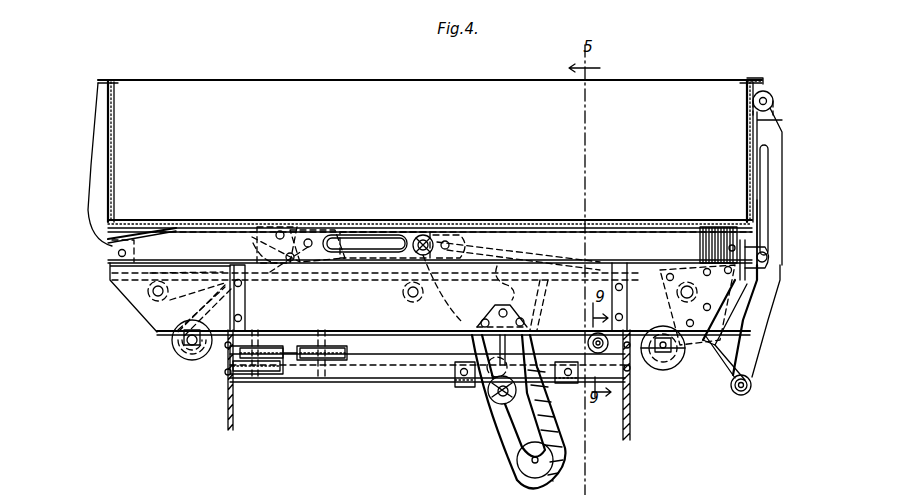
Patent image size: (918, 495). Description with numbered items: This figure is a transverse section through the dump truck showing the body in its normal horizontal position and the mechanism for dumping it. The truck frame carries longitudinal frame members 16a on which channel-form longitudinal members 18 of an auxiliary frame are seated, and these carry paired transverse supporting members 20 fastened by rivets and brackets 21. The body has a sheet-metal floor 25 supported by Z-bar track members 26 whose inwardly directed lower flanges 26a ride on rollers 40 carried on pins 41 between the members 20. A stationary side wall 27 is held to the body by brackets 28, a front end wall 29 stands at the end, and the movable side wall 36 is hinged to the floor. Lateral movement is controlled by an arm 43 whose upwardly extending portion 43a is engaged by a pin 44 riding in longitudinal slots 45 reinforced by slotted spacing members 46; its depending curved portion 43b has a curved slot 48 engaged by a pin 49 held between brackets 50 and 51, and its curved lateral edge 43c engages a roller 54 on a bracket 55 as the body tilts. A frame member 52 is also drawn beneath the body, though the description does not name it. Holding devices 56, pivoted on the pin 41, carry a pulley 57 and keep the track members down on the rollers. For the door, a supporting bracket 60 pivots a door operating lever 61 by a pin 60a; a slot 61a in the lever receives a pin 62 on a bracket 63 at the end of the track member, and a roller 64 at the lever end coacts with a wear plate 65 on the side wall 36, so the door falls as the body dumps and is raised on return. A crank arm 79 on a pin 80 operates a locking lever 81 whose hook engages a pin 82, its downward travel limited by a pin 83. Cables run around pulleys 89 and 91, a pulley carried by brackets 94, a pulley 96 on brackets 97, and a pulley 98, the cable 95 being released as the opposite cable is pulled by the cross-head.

The longitudinal frame member of the truck frame 16a is at (226, 430).
The longitudinal frame member 18 is at (226, 372).
The transverse supporting member 20 is at (110, 288).
The bracket 21 is at (230, 288).
The floor 25 is at (482, 228).
The transverse track member 26 is at (641, 240).
The lower horizontal flange 26a is at (508, 242).
The stationary side wall 27 is at (115, 112).
The bracket 28 is at (93, 184).
The front end wall 29 is at (277, 92).
The side wall 36 is at (753, 90).
The roller 40 is at (147, 293).
The pin 41 is at (150, 300).
The controlling arm 43 is at (490, 432).
The upwardly extending portion 43a is at (460, 240).
The depending curved portion 43b is at (565, 440).
The curved lateral edge 43c is at (560, 372).
The pin 44 is at (418, 237).
The longitudinal slot 45 is at (348, 233).
The slotted spacing member 46 is at (378, 230).
The curved slot 48 is at (560, 415).
The pin 49 is at (500, 396).
The bracket 50 is at (490, 350).
The bracket 51 is at (463, 387).
The frame bar 52 is at (415, 375).
The roller 54 is at (585, 345).
The bracket 55 is at (640, 366).
The holding device 56 is at (700, 224).
The pulley 57 is at (679, 294).
The supporting bracket 60 is at (755, 370).
The pin 60a is at (755, 385).
The door operating lever 61 is at (768, 345).
The slot 61a is at (763, 232).
The pin 62 is at (772, 258).
The bracket 63 is at (783, 285).
The roller 64 is at (773, 103).
The wear plate 65 is at (760, 128).
The crank arm 79 is at (290, 236).
The pin 80 is at (298, 257).
The locking lever 81 is at (252, 244).
The pin 82 is at (160, 297).
The pin 83 is at (246, 290).
The pulley 89 is at (258, 348).
The pulley 91 is at (340, 360).
The bracket 94 is at (176, 342).
The cable 95 is at (190, 357).
The pulley 96 is at (683, 357).
The bracket 97 is at (673, 362).
The pulley 98 is at (280, 374).